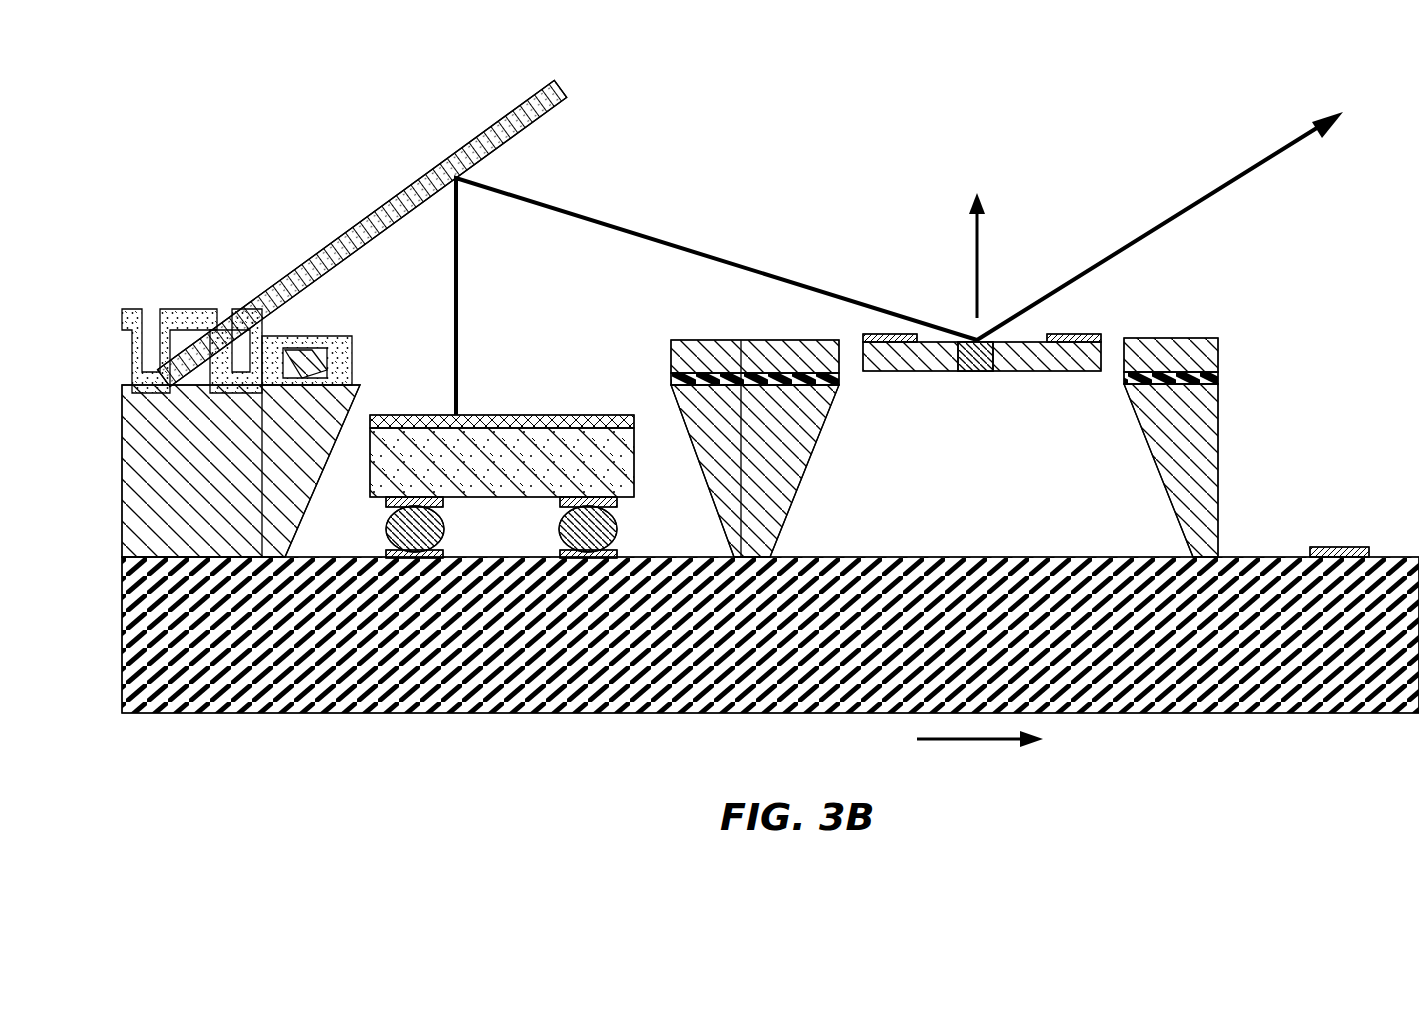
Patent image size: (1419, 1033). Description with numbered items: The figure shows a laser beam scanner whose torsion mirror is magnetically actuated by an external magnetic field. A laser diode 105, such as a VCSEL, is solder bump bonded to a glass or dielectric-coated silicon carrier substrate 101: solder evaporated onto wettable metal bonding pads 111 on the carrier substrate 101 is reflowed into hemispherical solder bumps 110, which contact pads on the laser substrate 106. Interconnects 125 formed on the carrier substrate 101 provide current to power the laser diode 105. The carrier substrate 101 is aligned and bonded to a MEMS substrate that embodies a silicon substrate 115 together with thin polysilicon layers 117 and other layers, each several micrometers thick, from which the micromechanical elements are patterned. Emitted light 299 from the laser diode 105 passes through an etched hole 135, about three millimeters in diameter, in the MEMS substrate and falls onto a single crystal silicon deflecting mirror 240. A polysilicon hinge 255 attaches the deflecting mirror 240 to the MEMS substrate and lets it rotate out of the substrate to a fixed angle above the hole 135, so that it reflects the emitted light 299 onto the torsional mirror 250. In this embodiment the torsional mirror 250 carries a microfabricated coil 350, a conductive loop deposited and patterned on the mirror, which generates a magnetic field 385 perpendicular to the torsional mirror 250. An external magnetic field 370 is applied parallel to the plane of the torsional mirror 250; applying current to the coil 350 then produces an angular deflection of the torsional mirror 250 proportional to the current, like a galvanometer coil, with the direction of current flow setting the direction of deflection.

The carrier substrate 101 is at (808, 715).
The laser diode 105 is at (499, 448).
The laser substrate 106 is at (634, 455).
The solder bumps 110 is at (445, 532).
The wettable metal bonding pads 111 is at (386, 553).
The silicon substrate 115 is at (122, 418).
The polysilicon layers 117 is at (386, 503).
The interconnects 125 is at (1340, 547).
The hole 135 is at (662, 410).
The deflecting mirror 240 is at (358, 222).
The torsional mirror 250 is at (928, 372).
The polysilicon hinge 255 is at (182, 308).
The emitted light 299 is at (459, 308).
The microfabricated coil 350 is at (878, 338).
The external magnetic field 370 is at (990, 742).
The magnetic field 385 is at (978, 270).